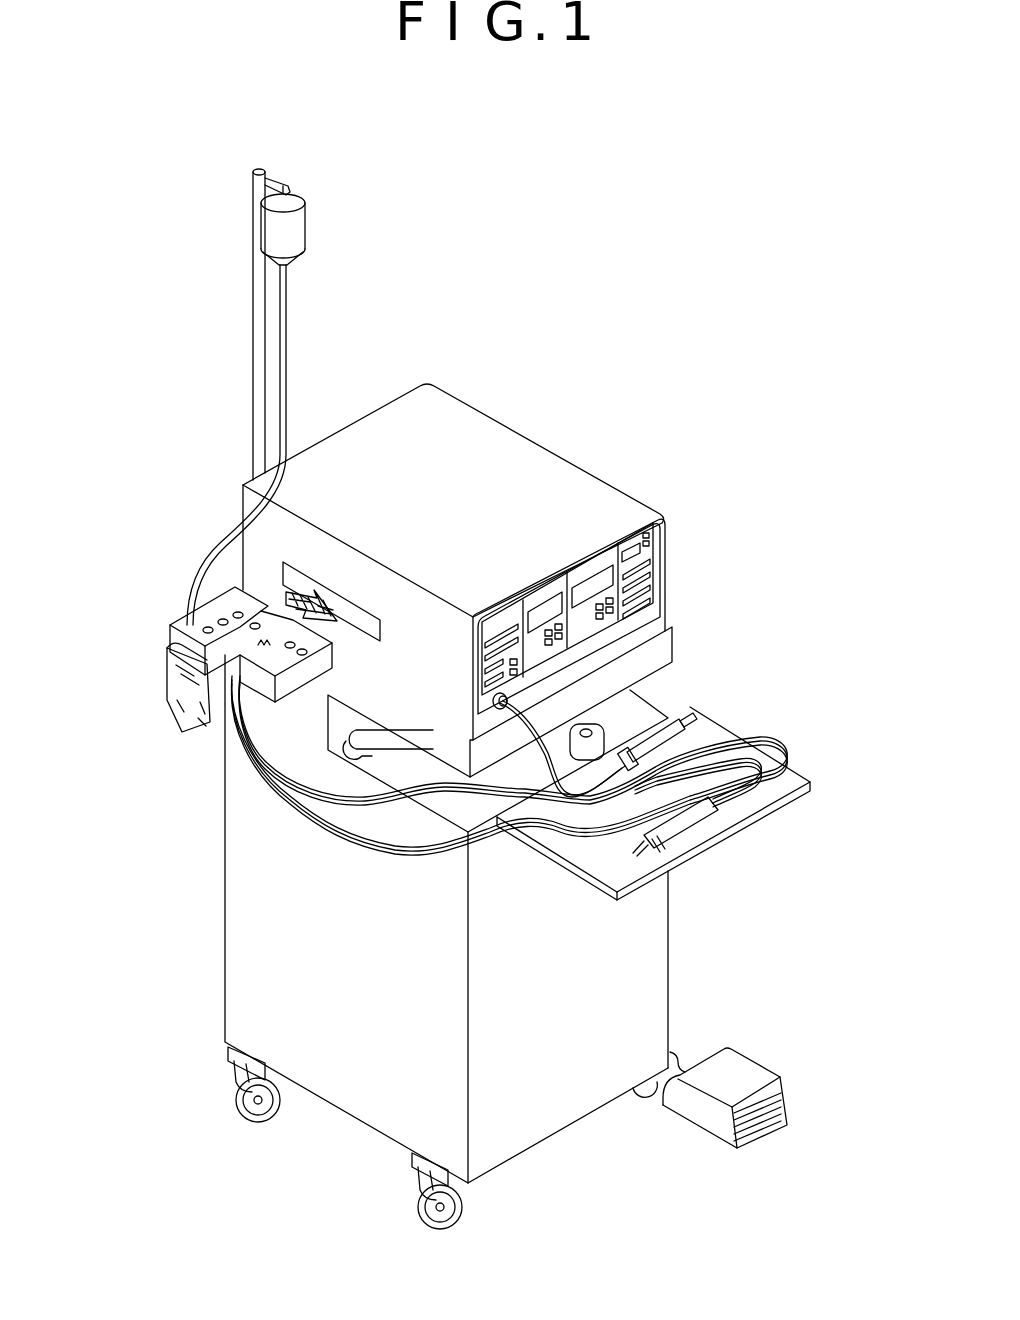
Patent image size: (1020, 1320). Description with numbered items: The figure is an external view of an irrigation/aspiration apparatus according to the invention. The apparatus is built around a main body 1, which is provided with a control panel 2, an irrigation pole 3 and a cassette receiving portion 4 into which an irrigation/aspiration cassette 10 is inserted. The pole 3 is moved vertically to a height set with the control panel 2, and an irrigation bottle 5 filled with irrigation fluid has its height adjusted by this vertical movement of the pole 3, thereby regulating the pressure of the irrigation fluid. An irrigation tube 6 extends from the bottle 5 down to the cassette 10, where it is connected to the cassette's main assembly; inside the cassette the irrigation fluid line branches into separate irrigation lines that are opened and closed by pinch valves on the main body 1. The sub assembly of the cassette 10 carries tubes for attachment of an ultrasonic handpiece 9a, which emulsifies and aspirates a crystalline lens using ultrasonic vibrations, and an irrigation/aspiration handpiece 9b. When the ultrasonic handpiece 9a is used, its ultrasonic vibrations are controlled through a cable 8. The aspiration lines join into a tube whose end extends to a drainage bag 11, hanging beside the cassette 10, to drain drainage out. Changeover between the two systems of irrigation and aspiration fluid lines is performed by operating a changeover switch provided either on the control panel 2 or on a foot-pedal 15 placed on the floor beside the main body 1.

The main body 1 is at (595, 505).
The control panel 2 is at (650, 573).
The irrigation pole 3 is at (255, 350).
The cassette receiving portion 4 is at (344, 590).
The irrigation bottle 5 is at (290, 240).
The irrigation tube 6 is at (222, 533).
The cable 8 is at (800, 747).
The ultrasonic handpiece 9a is at (686, 828).
The irrigation/aspiration handpiece 9b is at (670, 717).
The irrigation/aspiration cassette 10 is at (160, 603).
The drainage bag 11 is at (186, 705).
The foot-pedal 15 is at (727, 1078).